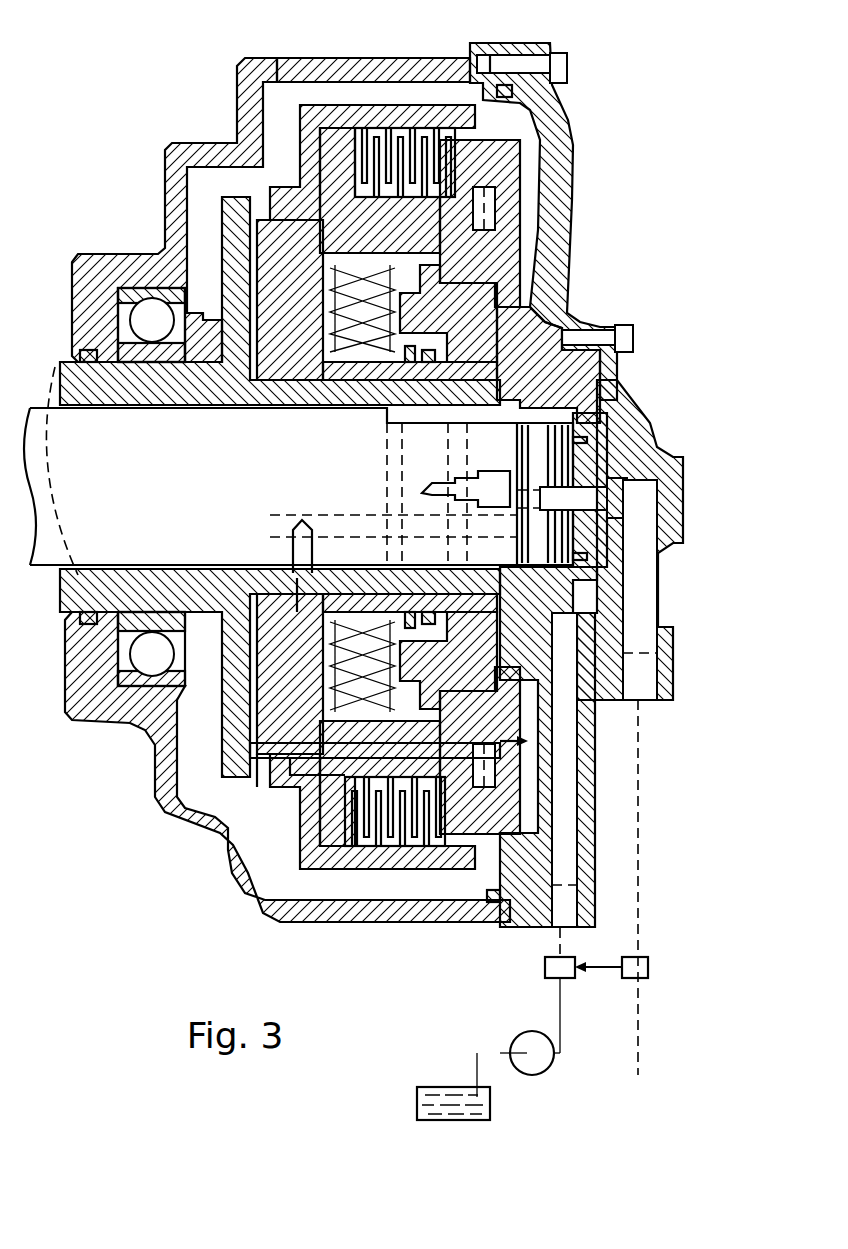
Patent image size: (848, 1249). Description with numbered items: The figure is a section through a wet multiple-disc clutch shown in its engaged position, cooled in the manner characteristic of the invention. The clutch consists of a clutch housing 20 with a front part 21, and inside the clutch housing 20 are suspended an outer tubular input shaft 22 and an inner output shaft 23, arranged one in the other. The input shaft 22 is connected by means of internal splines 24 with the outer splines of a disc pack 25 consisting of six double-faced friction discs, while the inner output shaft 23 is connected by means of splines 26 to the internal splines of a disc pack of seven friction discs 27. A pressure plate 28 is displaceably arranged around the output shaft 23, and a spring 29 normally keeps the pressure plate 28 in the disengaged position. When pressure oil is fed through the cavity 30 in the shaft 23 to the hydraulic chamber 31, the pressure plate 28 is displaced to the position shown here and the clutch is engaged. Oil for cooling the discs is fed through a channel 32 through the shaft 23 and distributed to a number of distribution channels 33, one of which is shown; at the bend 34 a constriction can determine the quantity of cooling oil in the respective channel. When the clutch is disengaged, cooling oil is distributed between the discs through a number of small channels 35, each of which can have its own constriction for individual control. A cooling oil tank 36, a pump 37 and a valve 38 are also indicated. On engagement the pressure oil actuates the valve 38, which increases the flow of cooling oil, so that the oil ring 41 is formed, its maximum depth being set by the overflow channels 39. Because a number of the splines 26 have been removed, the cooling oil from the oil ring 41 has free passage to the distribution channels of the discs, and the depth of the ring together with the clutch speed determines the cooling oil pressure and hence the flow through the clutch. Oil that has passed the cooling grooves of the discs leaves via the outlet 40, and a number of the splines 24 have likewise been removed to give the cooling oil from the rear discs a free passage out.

The clutch housing 20 is at (205, 132).
The front part 21 is at (580, 330).
The outer tubular input shaft 22 is at (362, 112).
The inner output shaft 23 is at (330, 178).
The internal splines 24 is at (488, 128).
The disc pack 25 is at (418, 127).
The splines 26 is at (484, 193).
The friction discs 27 is at (450, 170).
The pressure plate 28 is at (508, 254).
The spring 29 is at (390, 297).
The cavity 30 is at (646, 450).
The hydraulic chamber 31 is at (468, 330).
The channel 32 is at (300, 520).
The distribution channels 33 is at (350, 750).
The bend 34 is at (400, 736).
The small channels 35 is at (345, 768).
The cooling oil tank 36 is at (445, 1090).
The pump 37 is at (545, 1062).
The valve 38 is at (545, 965).
The overflow channels 39 is at (522, 736).
The outlet 40 is at (492, 133).
The oil ring 41 is at (492, 223).